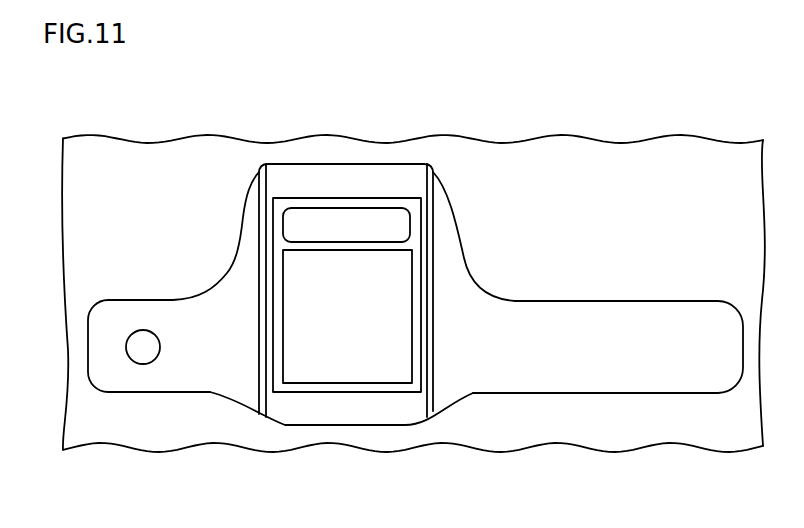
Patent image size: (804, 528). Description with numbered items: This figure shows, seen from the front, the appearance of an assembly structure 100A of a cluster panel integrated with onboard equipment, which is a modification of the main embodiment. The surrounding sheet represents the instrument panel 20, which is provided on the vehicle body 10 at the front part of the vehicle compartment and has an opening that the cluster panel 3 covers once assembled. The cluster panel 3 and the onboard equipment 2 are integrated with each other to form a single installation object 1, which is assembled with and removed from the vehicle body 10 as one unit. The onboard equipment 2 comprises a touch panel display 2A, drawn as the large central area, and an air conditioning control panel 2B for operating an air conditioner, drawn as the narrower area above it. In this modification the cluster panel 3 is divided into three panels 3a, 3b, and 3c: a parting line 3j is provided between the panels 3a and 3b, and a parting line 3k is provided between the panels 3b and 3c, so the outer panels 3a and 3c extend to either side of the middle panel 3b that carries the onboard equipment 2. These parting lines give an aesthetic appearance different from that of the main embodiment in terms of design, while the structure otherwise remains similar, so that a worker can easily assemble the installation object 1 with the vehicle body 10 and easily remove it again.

The assembly structure of a cluster panel integrated with onboard equipment 100A is at (415, 276).
The installation object 1 is at (391, 230).
The onboard equipment 2 is at (347, 234).
The touch panel display 2A is at (347, 315).
The air conditioning control panel 2B is at (374, 222).
The cluster panel 3 is at (415, 290).
The panel 3a is at (190, 368).
The panel 3b is at (352, 405).
The panel 3c is at (587, 367).
The parting line 3j is at (262, 405).
The parting line 3k is at (428, 405).
The instrument panel 20 is at (413, 264).
The vehicle body 10 is at (624, 228).